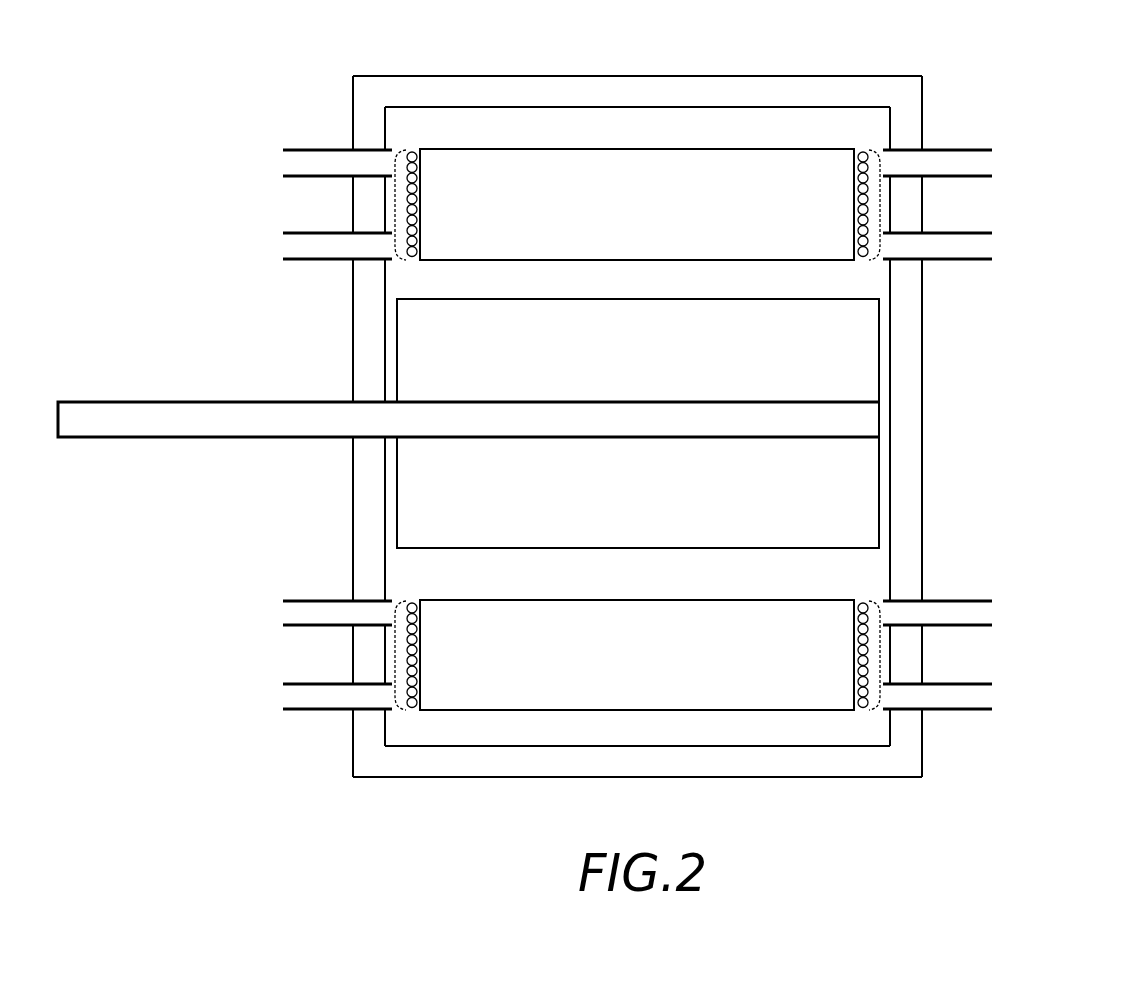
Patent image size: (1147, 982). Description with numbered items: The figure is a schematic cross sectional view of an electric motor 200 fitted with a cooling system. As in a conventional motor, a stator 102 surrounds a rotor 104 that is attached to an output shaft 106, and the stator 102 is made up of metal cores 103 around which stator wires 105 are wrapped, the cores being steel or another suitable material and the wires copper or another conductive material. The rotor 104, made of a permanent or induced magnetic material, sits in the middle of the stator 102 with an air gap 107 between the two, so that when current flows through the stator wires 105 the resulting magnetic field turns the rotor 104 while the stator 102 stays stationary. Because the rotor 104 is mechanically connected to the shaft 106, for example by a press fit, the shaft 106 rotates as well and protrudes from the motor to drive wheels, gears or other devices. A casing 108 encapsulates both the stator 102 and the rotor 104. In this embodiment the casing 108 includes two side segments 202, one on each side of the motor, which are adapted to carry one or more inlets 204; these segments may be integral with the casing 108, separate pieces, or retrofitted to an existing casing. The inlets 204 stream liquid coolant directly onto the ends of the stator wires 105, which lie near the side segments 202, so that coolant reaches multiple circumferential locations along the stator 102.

The electric motor 200 is at (194, 98).
The stator 102 is at (831, 128).
The metal cores 103 is at (545, 175).
The rotor 104 is at (833, 355).
The stator wires 105 is at (395, 205).
The output shaft 106 is at (292, 422).
The air gap 107 is at (402, 281).
The casing 108 is at (907, 395).
The side segments 202 is at (367, 752).
The inlets 204 is at (298, 165).